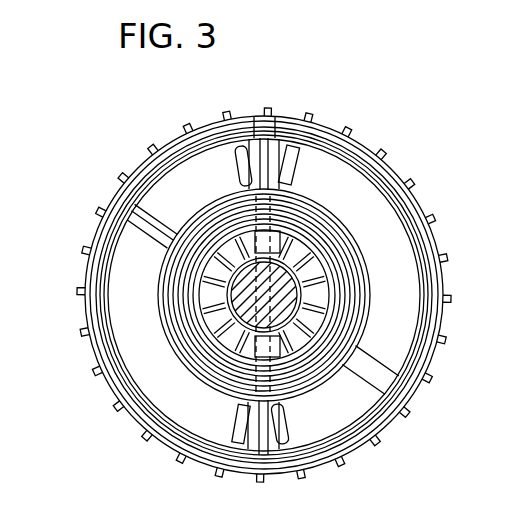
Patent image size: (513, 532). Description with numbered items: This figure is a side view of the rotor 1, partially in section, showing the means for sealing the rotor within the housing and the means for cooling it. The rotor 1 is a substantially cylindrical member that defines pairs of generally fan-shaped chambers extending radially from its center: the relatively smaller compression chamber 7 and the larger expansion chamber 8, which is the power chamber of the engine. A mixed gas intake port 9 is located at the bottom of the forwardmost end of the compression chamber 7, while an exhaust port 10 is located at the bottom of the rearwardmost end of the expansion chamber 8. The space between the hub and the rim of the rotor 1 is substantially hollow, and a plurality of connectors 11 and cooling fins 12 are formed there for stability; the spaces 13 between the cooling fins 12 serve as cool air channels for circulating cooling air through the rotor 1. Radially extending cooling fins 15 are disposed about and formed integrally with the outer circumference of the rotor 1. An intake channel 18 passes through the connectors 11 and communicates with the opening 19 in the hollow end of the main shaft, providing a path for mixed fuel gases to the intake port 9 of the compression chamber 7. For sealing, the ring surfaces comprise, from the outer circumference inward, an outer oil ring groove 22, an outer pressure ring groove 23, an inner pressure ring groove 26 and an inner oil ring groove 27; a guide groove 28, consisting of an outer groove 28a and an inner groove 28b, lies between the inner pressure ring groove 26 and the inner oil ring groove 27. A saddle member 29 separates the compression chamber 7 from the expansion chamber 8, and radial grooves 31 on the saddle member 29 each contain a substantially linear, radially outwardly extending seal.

The rotor 1 is at (131, 156).
The compression chamber 7 is at (200, 173).
The expansion chamber 8 is at (340, 172).
The mixed gas intake port 9 is at (230, 150).
The exhaust port 10 is at (284, 165).
The connectors 11 is at (233, 243).
The cooling fins 12 is at (310, 265).
The cool air channels 13 is at (320, 258).
The radially extending cooling fins 15 is at (410, 181).
The intake channel 18 is at (282, 235).
The opening 19 is at (323, 318).
The outer oil ring groove 22 is at (104, 227).
The outer pressure ring groove 23 is at (104, 270).
The inner pressure ring groove 26 is at (163, 291).
The inner oil ring groove 27 is at (190, 340).
The guide groove 28 is at (121, 298).
The outer groove 28a is at (174, 317).
The inner groove 28b is at (175, 309).
The saddle member 29 is at (290, 152).
The grooves 31 is at (272, 186).